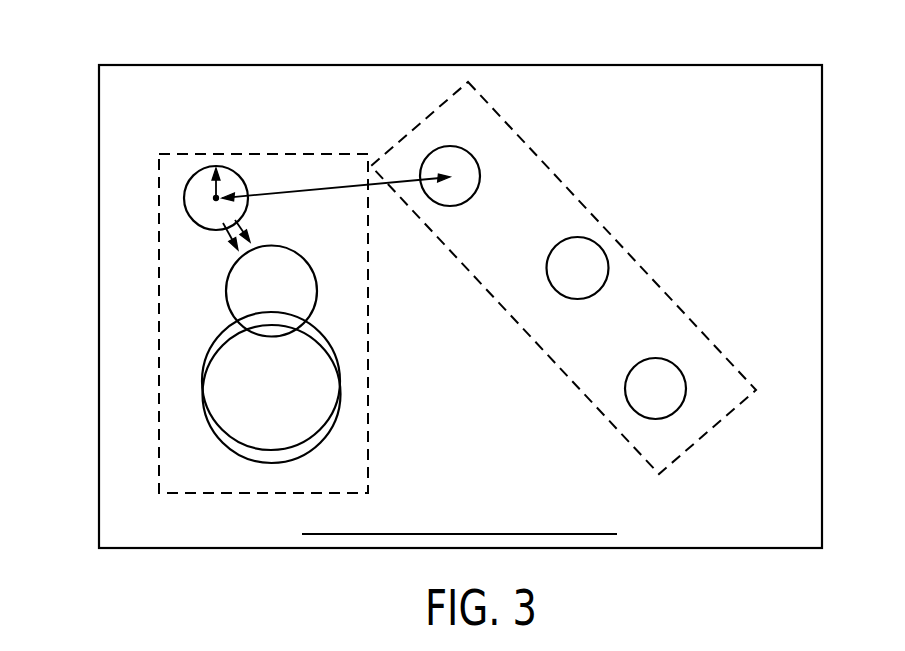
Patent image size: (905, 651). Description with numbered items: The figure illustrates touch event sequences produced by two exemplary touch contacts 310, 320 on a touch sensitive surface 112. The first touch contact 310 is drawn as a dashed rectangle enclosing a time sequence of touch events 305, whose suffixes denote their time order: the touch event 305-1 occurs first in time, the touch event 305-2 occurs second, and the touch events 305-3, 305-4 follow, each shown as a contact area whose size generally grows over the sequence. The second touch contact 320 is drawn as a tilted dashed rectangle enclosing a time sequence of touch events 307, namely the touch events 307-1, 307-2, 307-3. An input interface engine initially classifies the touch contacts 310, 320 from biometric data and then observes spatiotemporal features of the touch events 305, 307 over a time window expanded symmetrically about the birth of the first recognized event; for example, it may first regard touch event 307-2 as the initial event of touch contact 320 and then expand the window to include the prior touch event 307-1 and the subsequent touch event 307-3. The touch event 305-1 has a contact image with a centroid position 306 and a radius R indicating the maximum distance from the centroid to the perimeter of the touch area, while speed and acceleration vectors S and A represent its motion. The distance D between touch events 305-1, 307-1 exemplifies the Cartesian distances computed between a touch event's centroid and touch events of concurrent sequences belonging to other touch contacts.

The touch sensitive surface 112 is at (462, 65).
The touch events 305 is at (245, 290).
The touch event 305-1 is at (243, 176).
The touch event 305-2 is at (271, 246).
The touch event 305-3 is at (337, 425).
The touch event 305-4 is at (335, 350).
The centroid position 306 is at (215, 199).
The touch events 307 is at (615, 254).
The touch event 307-1 is at (479, 170).
The touch event 307-2 is at (578, 237).
The touch event 307-3 is at (677, 366).
The touch contact 310 is at (263, 153).
The touch contact 320 is at (613, 233).